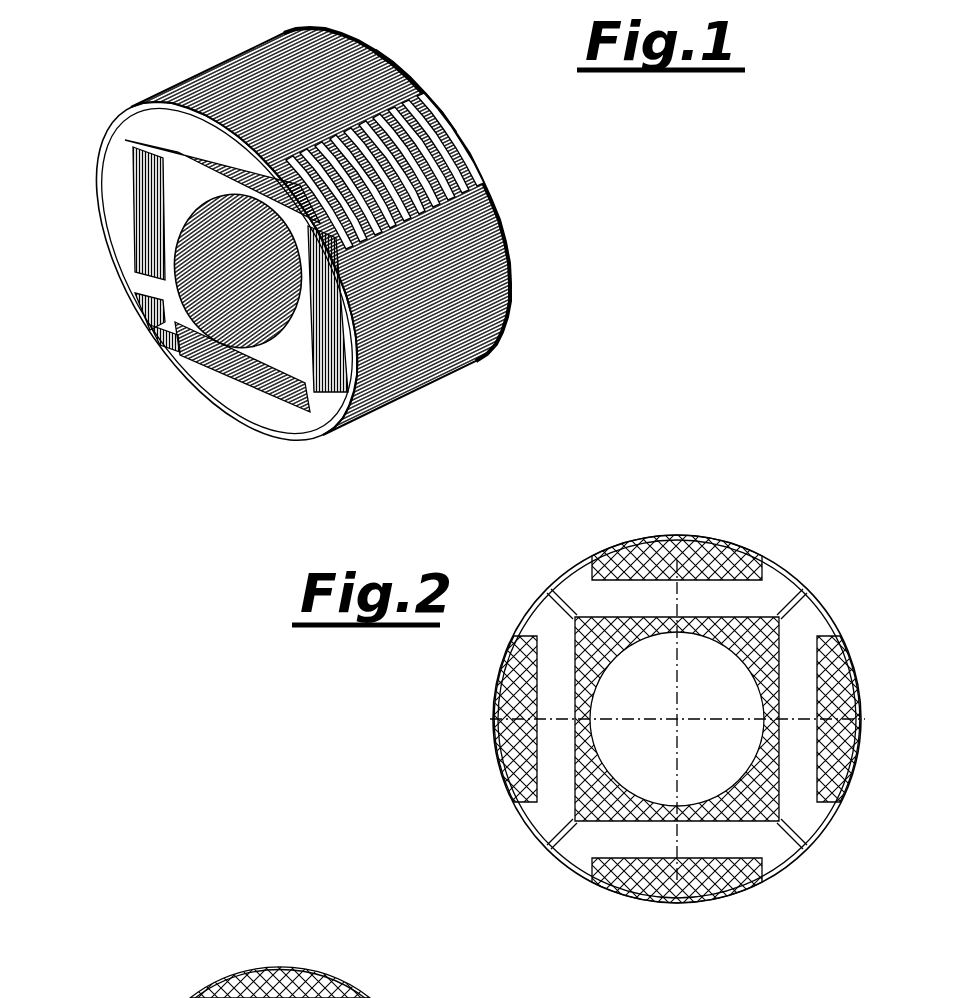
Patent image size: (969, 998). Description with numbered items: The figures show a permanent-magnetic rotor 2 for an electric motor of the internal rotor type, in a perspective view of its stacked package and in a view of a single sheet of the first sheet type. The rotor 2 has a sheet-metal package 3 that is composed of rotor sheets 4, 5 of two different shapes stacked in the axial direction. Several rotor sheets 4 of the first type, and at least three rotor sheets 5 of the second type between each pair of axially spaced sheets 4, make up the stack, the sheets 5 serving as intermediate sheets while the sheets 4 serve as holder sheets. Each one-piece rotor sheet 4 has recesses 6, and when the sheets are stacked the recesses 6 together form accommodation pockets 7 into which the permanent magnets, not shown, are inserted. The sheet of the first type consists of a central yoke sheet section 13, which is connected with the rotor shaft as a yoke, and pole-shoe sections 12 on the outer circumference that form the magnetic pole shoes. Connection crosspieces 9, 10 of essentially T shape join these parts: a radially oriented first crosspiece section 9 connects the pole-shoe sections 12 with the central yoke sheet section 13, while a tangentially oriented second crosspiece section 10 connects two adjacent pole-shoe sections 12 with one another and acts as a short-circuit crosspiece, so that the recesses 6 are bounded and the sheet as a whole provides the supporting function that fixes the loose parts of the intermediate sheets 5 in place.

In FIG. 1, the permanent-magnetic rotor 2 is at (536, 156).
In FIG. 1, the sheet-metal package 3 is at (424, 382).
In FIG. 1, the rotor sheet 4 is at (459, 122).
In FIG. 2, the rotor sheet 4 is at (797, 538).
In FIG. 1, the rotor sheet 5 is at (418, 88).
In FIG. 2, the recess 6 is at (552, 683).
In FIG. 1, the accommodation pocket 7 is at (222, 162).
In FIG. 1, the first crosspiece section 9 is at (155, 320).
In FIG. 2, the first crosspiece section 9 is at (563, 823).
In FIG. 1, the second crosspiece section 10 is at (163, 355).
In FIG. 2, the second crosspiece section 10 is at (568, 863).
In FIG. 1, the pole-shoe section 12 is at (220, 395).
In FIG. 2, the pole-shoe section 12 is at (512, 748).
In FIG. 1, the central yoke sheet section 13 is at (283, 365).
In FIG. 2, the central yoke sheet section 13 is at (725, 807).